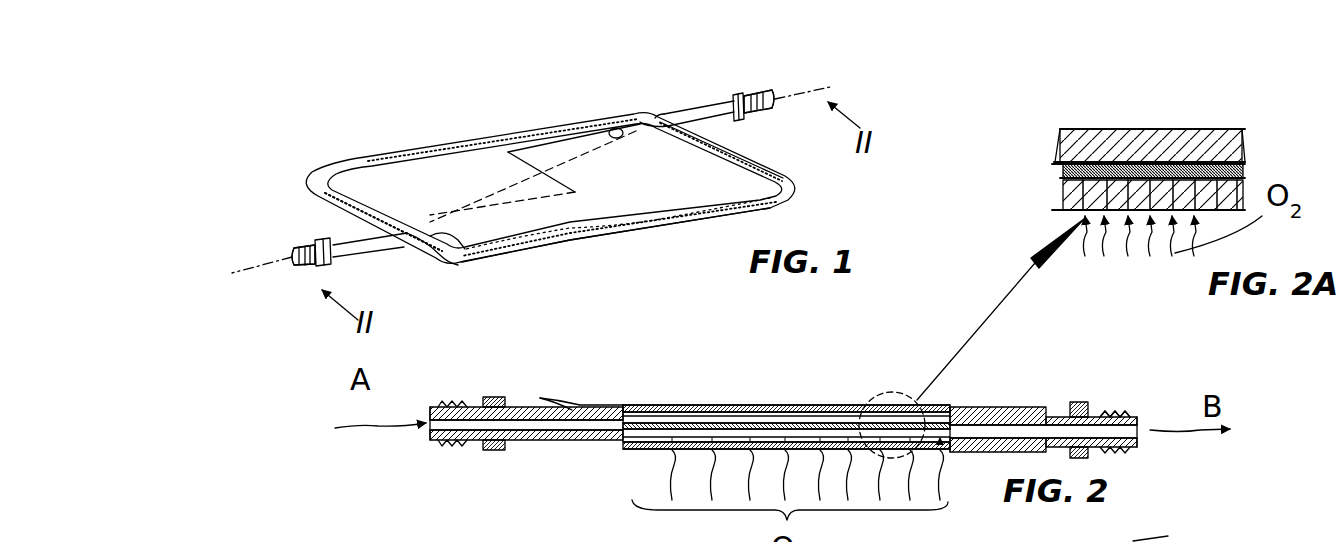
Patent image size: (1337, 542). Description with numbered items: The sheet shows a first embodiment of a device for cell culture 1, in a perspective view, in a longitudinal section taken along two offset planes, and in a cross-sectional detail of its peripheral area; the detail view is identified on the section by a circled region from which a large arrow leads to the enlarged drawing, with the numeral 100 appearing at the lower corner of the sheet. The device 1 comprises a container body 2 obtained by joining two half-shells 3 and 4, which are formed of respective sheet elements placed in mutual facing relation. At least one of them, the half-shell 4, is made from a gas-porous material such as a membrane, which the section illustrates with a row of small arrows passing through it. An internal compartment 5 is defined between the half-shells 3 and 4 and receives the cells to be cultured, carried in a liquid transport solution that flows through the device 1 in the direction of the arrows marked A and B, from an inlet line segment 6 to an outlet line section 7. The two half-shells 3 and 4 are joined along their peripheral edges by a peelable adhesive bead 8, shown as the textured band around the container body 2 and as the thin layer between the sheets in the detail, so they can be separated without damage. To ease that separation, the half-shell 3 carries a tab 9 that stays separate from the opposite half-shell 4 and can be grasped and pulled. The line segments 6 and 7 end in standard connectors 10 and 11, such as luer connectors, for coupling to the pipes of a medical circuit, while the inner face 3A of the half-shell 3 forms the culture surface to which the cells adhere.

In FIG. 1, the device for cell culture 1 is at (388, 136).
In FIG. 1, the container body 2 is at (480, 168).
In FIG. 1, the half-shell 3 is at (722, 183).
In FIG. 2A, the half-shell 3 is at (1140, 150).
In FIG. 2, the half-shell 3 is at (703, 406).
In FIG. 2, the inner face 3A is at (830, 406).
In FIG. 1, the half-shell 4 is at (697, 226).
In FIG. 2A, the half-shell 4 is at (1148, 233).
In FIG. 2, the half-shell 4 is at (634, 447).
In FIG. 2, the internal compartment 5 is at (752, 418).
In FIG. 1, the inlet line segment 6 is at (387, 250).
In FIG. 2, the inlet line segment 6 is at (522, 406).
In FIG. 1, the outlet line section 7 is at (698, 107).
In FIG. 2, the outlet line section 7 is at (1063, 408).
In FIG. 1, the peelable adhesive bead 8 is at (338, 205).
In FIG. 2A, the peelable adhesive bead 8 is at (1072, 166).
In FIG. 1, the tab 9 is at (455, 266).
In FIG. 2, the tab 9 is at (546, 394).
In FIG. 1, the connector 10 is at (307, 270).
In FIG. 2, the connector 10 is at (440, 406).
In FIG. 1, the connector 11 is at (762, 92).
In FIG. 2, the connector 11 is at (1102, 411).
In FIG. 2, the oxygenator device 100 is at (1203, 527).